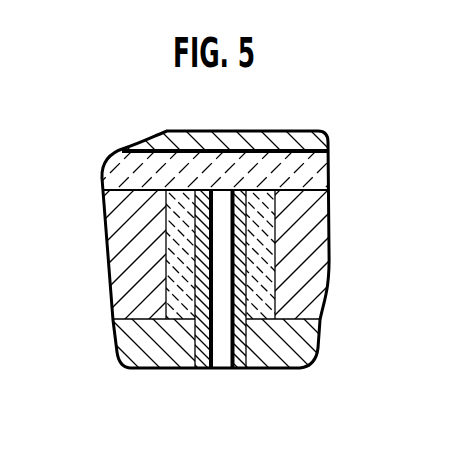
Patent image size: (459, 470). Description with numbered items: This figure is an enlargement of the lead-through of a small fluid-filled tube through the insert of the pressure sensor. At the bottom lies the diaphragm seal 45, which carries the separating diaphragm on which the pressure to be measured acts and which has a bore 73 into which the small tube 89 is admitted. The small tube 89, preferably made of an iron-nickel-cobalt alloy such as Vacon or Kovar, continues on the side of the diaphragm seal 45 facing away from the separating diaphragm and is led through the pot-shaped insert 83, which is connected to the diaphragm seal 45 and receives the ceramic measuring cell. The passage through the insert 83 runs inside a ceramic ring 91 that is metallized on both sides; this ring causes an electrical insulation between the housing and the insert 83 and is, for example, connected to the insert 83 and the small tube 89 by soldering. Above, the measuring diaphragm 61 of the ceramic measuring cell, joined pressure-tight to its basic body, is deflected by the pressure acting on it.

The measuring diaphragm 61 is at (314, 171).
The insert 83 is at (112, 272).
The ceramic ring 91 is at (272, 266).
The bore 73 is at (202, 368).
The small tube 89 is at (238, 330).
The diaphragm seal 45 is at (165, 360).